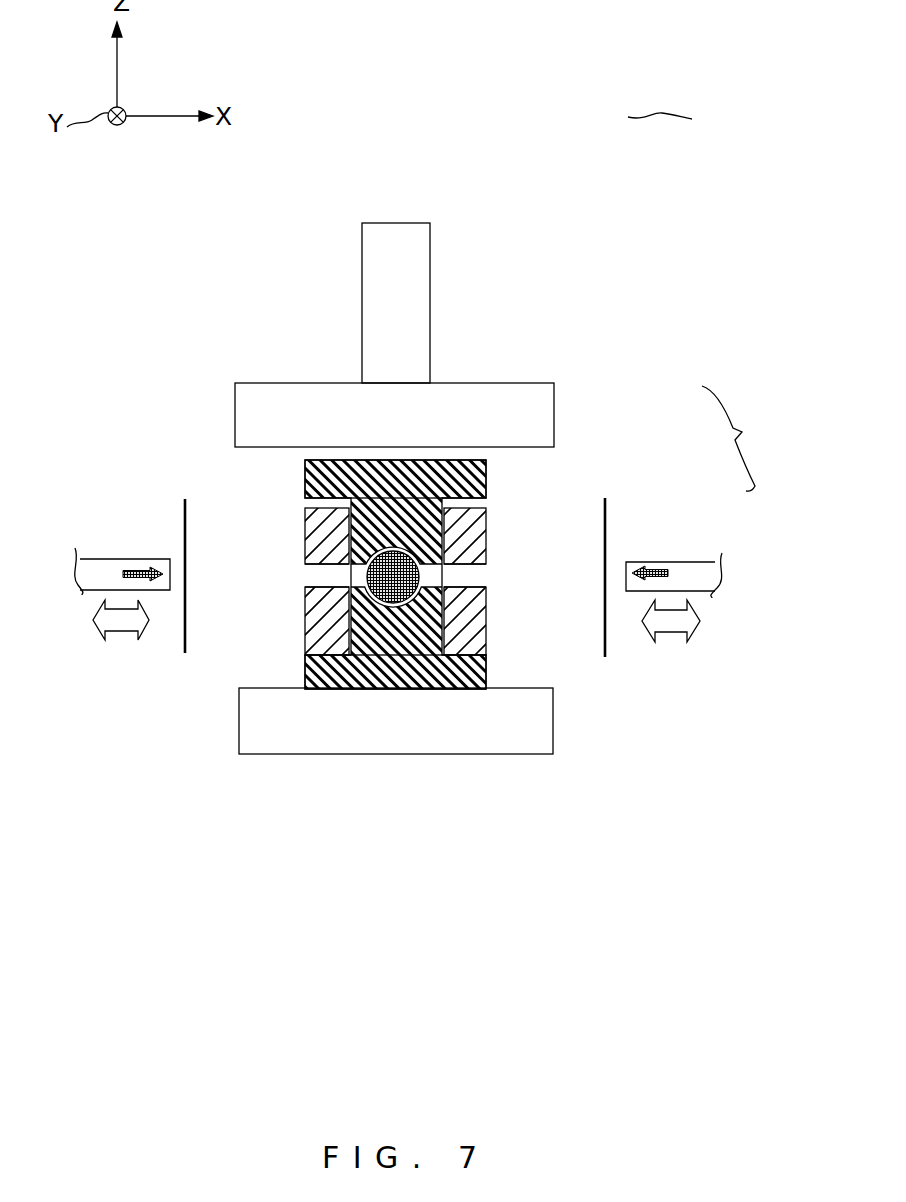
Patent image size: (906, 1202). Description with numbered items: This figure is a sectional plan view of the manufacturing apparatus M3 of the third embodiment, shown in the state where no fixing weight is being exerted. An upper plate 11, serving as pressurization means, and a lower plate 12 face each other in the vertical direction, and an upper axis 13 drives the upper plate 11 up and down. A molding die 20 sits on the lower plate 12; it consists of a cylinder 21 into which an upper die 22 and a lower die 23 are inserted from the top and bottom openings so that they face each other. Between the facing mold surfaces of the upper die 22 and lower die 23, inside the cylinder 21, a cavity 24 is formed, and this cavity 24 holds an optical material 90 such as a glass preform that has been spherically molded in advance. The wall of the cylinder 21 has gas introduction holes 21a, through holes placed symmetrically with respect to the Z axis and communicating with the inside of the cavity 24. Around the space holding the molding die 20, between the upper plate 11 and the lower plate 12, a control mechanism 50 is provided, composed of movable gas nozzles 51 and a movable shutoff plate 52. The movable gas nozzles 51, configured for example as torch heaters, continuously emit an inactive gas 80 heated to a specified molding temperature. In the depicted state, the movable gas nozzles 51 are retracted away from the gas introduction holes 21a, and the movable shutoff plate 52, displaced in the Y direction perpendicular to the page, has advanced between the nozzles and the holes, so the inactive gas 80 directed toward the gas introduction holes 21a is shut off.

The upper plate 11 is at (257, 399).
The lower plate 12 is at (300, 739).
The upper axis 13 is at (420, 242).
The molding die 20 is at (395, 598).
The cylinder 21 is at (325, 520).
The gas introduction holes 21a is at (326, 574).
The upper die 22 is at (358, 483).
The lower die 23 is at (373, 642).
The cavity 24 is at (425, 580).
The control mechanism 50 is at (421, 521).
The movable gas nozzles 51 is at (88, 574).
The movable shutoff plate 52 is at (182, 505).
The inactive gas 80 is at (137, 567).
The optical material 90 is at (393, 578).
The manufacturing apparatus M3 is at (660, 100).